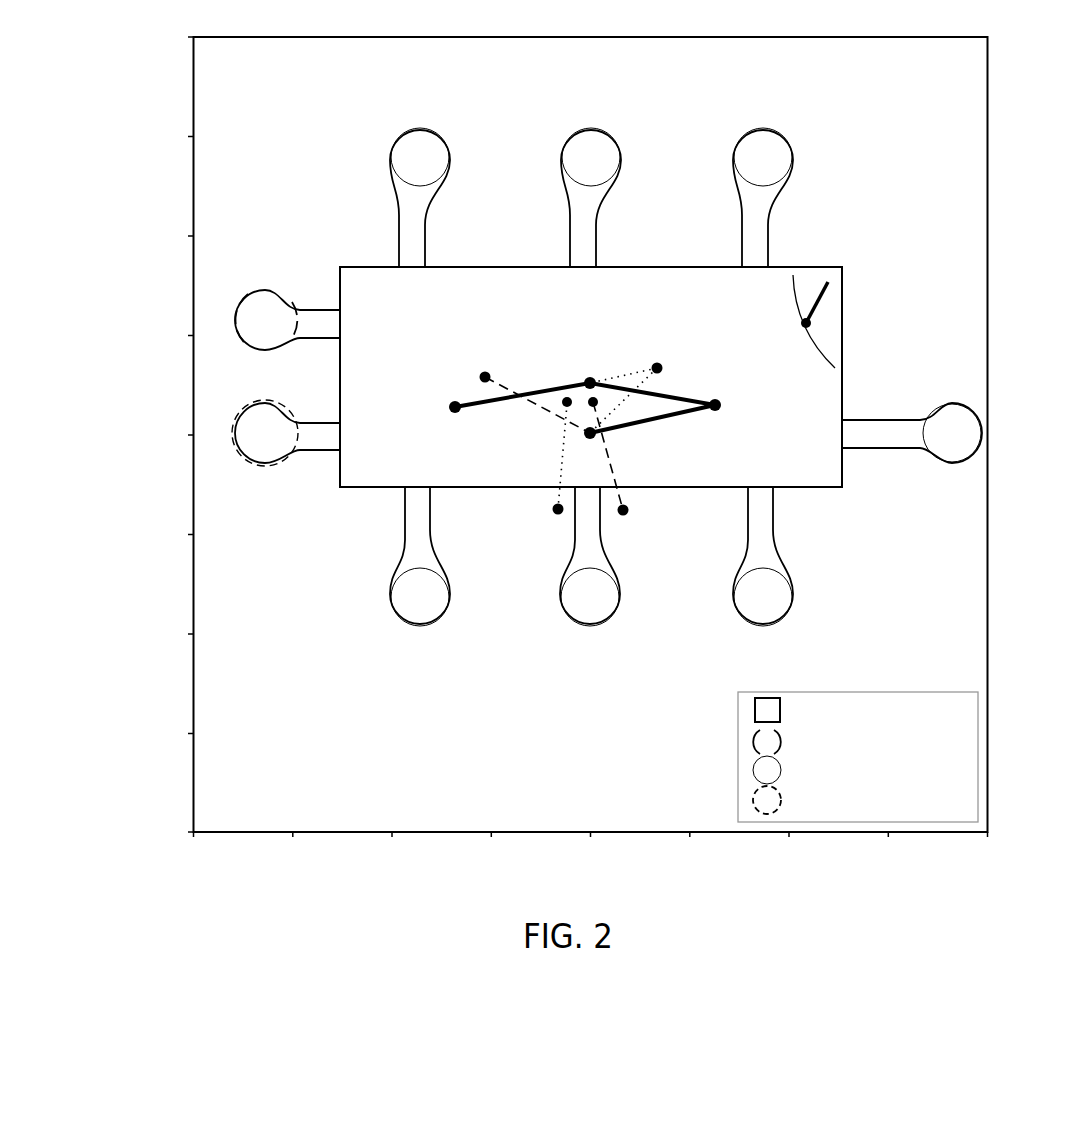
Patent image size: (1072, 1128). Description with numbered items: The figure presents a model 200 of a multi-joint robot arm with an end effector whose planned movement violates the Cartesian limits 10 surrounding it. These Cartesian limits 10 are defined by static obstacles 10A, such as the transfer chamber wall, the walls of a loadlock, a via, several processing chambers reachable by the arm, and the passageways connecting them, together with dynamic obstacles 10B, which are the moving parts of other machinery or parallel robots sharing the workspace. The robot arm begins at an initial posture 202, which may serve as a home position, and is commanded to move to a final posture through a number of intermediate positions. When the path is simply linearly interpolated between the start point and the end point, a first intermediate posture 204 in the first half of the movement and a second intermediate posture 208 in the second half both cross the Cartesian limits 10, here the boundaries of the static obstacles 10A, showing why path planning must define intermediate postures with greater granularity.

The model 200 is at (280, 81).
The Cartesian limits 10 is at (925, 248).
The static obstacles 10A is at (845, 283).
The dynamic obstacles 10B is at (818, 345).
The initial posture 202 is at (495, 408).
The first intermediate posture 204 is at (630, 373).
The second intermediate posture 208 is at (608, 450).